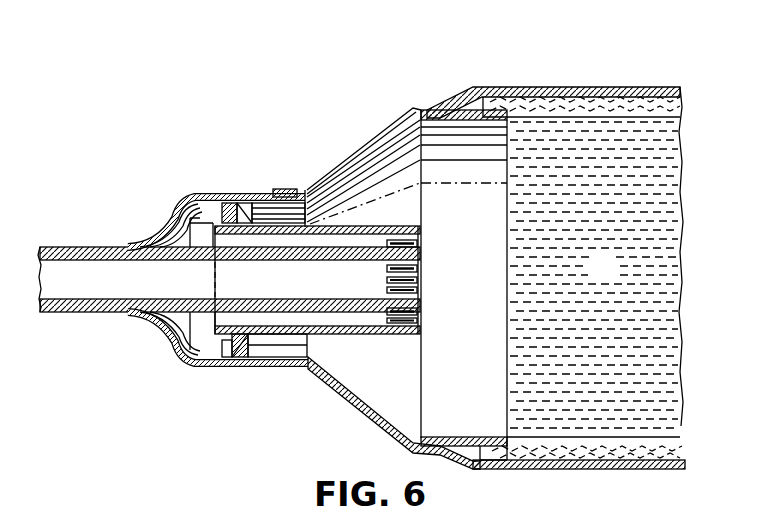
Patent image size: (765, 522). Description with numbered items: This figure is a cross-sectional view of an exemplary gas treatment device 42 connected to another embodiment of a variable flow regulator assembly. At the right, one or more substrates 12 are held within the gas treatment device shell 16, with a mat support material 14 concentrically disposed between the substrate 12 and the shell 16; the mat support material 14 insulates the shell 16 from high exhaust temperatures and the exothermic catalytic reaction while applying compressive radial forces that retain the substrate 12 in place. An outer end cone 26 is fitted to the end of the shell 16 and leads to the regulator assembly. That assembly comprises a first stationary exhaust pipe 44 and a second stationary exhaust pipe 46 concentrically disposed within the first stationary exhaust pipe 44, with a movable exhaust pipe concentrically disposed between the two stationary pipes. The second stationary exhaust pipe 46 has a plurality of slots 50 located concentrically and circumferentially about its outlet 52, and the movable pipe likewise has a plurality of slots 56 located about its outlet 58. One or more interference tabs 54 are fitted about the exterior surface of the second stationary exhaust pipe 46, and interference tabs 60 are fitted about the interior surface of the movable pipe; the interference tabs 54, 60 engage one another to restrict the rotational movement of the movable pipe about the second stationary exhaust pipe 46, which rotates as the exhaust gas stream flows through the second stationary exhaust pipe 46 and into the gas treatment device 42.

The substrate 12 is at (615, 280).
The mat support material 14 is at (682, 110).
The gas treatment device shell 16 is at (548, 88).
The outer end cone 26 is at (330, 170).
The gas treatment device 42 is at (369, 97).
The first stationary exhaust pipe 44 is at (188, 200).
The second stationary exhaust pipe 46 is at (147, 313).
The slots 50 is at (423, 280).
The outlet 52 is at (423, 290).
The interference tabs 54 is at (227, 205).
The slots 56 is at (423, 247).
The outlet 58 is at (423, 313).
The interference tabs 60 is at (248, 216).